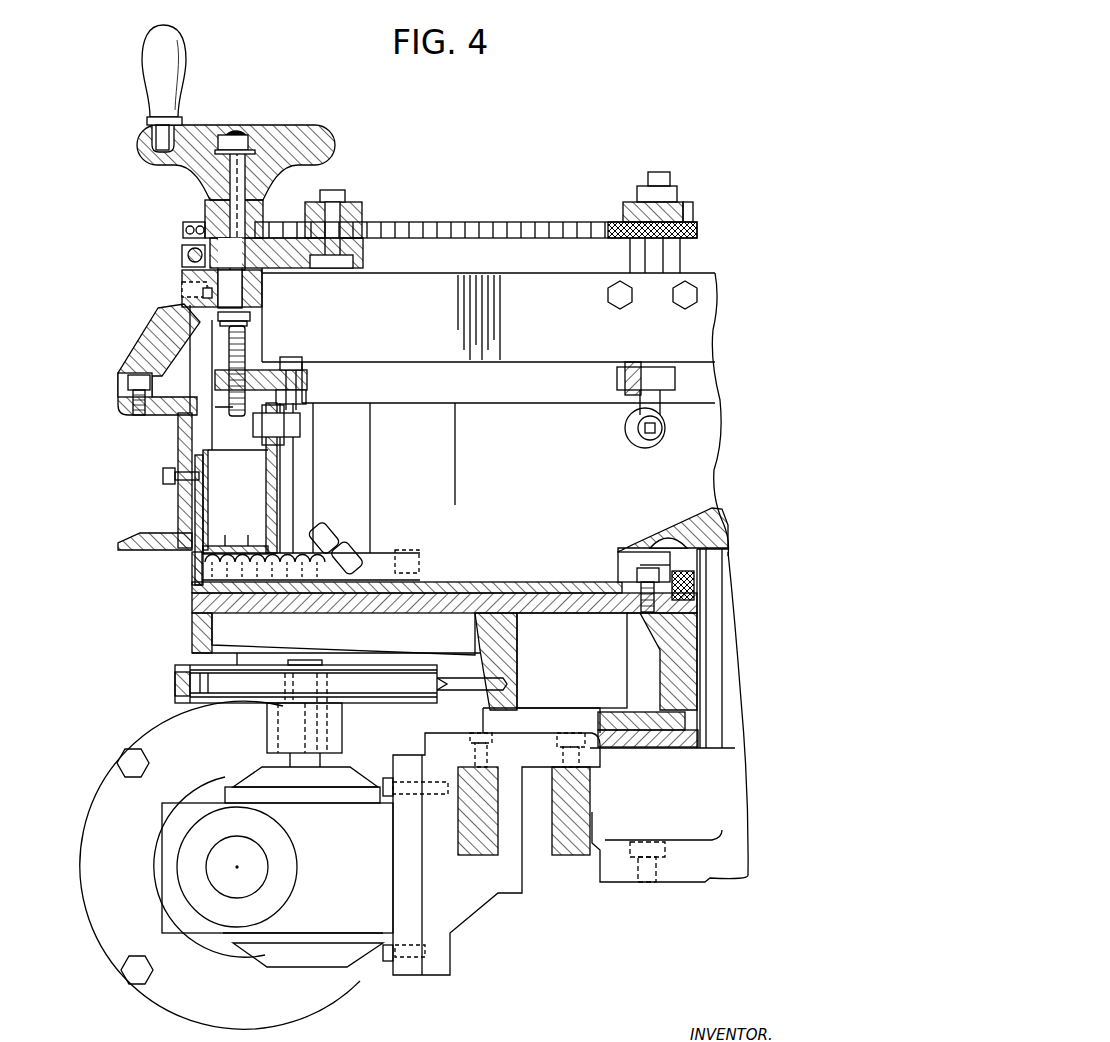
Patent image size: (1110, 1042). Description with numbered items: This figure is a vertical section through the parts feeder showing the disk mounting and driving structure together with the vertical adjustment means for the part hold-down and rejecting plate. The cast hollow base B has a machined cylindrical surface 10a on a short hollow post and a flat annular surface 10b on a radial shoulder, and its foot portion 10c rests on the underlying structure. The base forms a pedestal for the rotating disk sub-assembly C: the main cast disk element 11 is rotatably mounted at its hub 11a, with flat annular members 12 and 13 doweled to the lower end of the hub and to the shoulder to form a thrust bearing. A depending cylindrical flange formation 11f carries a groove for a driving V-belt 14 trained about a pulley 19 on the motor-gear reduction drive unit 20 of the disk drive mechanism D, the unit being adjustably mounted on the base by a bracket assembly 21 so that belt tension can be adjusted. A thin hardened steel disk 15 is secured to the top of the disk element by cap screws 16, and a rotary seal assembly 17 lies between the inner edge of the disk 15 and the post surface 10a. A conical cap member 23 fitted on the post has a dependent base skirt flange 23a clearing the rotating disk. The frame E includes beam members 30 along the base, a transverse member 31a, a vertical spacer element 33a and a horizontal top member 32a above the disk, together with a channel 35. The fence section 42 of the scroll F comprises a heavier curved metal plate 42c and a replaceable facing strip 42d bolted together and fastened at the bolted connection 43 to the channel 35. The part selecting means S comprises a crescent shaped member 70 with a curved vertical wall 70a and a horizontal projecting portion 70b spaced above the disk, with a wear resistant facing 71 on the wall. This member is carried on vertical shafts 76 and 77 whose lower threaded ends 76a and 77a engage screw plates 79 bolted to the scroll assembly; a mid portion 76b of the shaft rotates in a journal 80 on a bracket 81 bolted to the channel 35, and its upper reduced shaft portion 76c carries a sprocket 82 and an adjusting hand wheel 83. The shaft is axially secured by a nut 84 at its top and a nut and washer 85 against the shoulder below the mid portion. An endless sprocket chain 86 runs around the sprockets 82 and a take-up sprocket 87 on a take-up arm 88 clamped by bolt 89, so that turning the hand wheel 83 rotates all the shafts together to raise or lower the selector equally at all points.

The cylindrical surface 10a is at (724, 653).
The flat annular surface 10b is at (734, 740).
The foot portion 10c is at (700, 880).
The disk element 11 is at (190, 630).
The hub 11a is at (680, 668).
The cylindrical flange formation 11f is at (478, 655).
The flat annular member 12 is at (608, 712).
The flat annular member 13 is at (638, 750).
The V-belt 14 is at (450, 697).
The hardened steel disk 15 is at (520, 582).
The cap screws 16 is at (645, 566).
The rotary seal assembly 17 is at (705, 580).
The pulley 19 is at (365, 703).
The motor-gear reduction drive unit 20 is at (82, 915).
The bracket assembly 21 is at (450, 900).
The conical cap member 23 is at (700, 524).
The base skirt flange 23a is at (626, 567).
The beam members 30 is at (560, 857).
The transverse member 31a is at (538, 717).
The horizontal top member 32a is at (718, 295).
The vertical spacer element 33a is at (185, 416).
The channel 35 is at (180, 502).
The fence section 42 is at (195, 456).
The curved metal plate 42c is at (192, 572).
The facing strip 42d is at (192, 520).
The bolted connection 43 is at (165, 478).
The crescent shaped member 70 is at (264, 467).
The curved vertical wall 70a is at (268, 497).
The horizontal projecting portion 70b is at (258, 542).
The wear resistant facing 71 is at (279, 465).
The vertical shaft 76 is at (239, 128).
The lower threaded end 76a is at (247, 340).
The mid portion 76b is at (242, 265).
The upper reduced shaft portion 76c is at (230, 180).
The vertical shaft 77 is at (670, 178).
The lower threaded end 77a is at (665, 425).
The screw plate 79 is at (300, 370).
The journal 80 is at (265, 283).
The bracket 81 is at (158, 332).
The sprocket 82 is at (185, 230).
The hand wheel 83 is at (335, 147).
The nut 84 is at (250, 133).
The nut and washer 85 is at (252, 316).
The sprocket chain 86 is at (538, 222).
The take-up sprocket 87 is at (363, 210).
The take-up arm 88 is at (365, 260).
The bolt 89 is at (182, 254).
The base B is at (592, 835).
The rotating disk sub-assembly C is at (170, 610).
The disk drive mechanism D is at (82, 777).
The frame E is at (724, 320).
The fence structure F is at (185, 565).
The part selecting means S is at (245, 430).